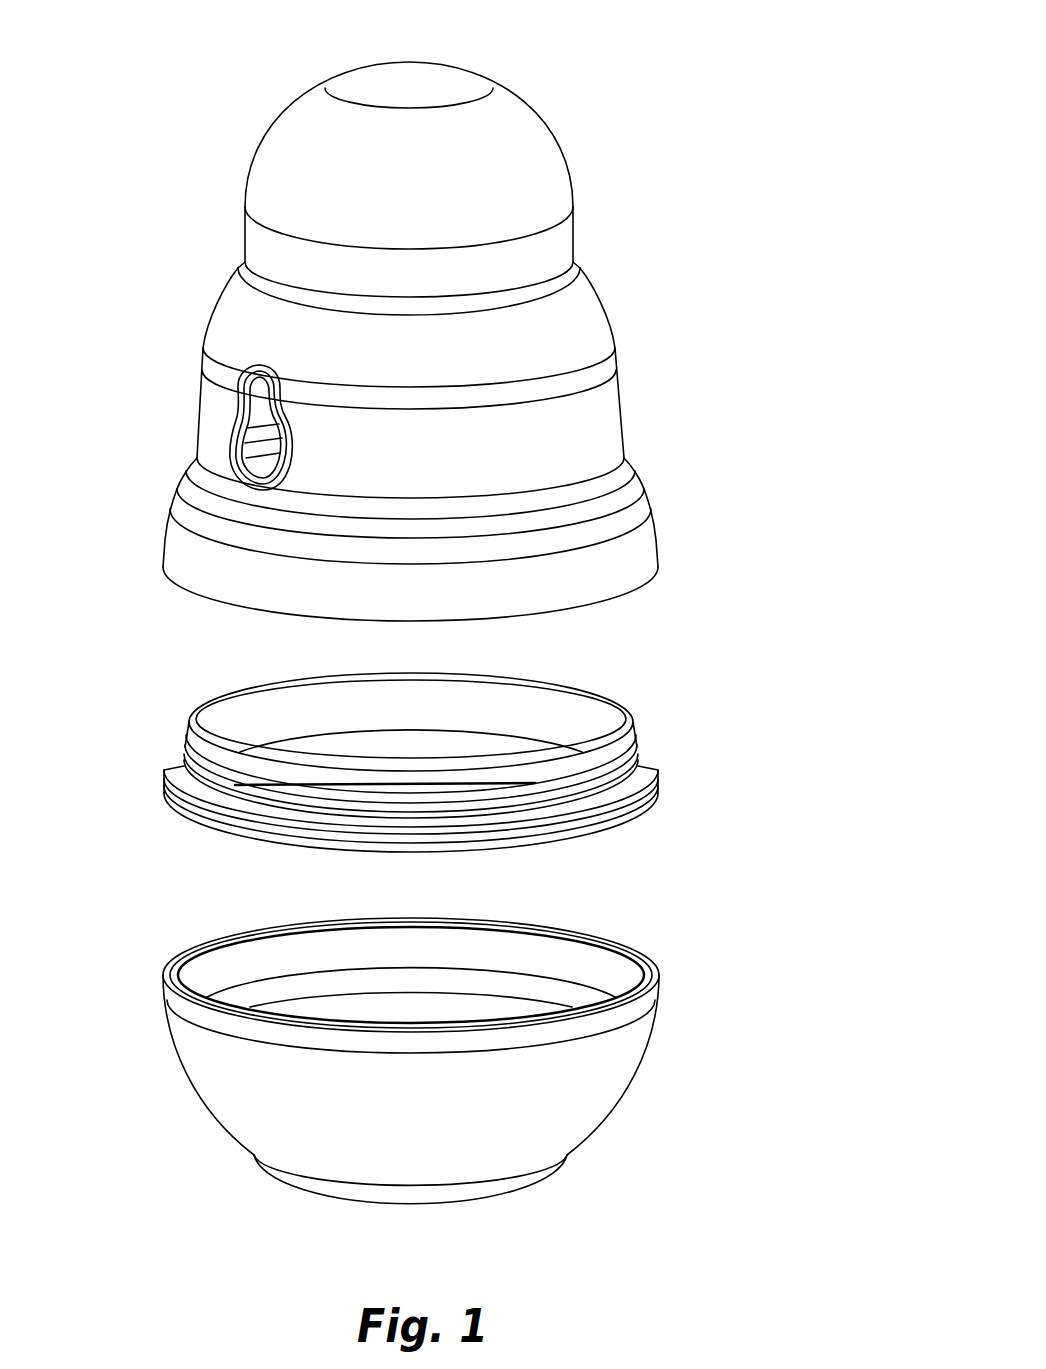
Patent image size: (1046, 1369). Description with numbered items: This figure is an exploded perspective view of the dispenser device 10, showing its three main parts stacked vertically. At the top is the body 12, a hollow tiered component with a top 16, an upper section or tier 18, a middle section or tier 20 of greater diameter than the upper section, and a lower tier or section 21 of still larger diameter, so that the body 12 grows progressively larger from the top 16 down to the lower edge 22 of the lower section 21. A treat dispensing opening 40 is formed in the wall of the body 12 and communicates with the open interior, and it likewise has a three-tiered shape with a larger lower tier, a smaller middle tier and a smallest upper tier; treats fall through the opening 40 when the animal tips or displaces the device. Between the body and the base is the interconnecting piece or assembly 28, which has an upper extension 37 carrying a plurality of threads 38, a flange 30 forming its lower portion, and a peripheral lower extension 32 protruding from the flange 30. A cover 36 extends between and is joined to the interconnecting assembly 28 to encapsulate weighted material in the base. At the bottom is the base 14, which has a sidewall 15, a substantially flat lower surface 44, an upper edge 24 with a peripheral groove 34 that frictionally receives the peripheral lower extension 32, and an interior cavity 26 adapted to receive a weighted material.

The dispenser device 10 is at (697, 138).
The body 12 is at (652, 270).
The base 14 is at (618, 1183).
The sidewall 15 is at (507, 1140).
The top 16 is at (414, 82).
The upper section or tier 18 is at (556, 146).
The middle section or tier 20 is at (623, 408).
The lower tier or section 21 is at (657, 525).
The lower edge 22 is at (641, 588).
The upper edge 24 is at (200, 1007).
The interior cavity 26 is at (485, 980).
The interconnecting piece or assembly 28 is at (806, 718).
The flange 30 is at (177, 786).
The peripheral lower extension 32 is at (268, 838).
The peripheral groove 34 is at (176, 972).
The cover 36 is at (455, 755).
The upper extension 37 is at (233, 730).
The threads 38 is at (184, 746).
The treat dispensing opening 40 is at (262, 404).
The substantially flat lower surface 44 is at (433, 1208).